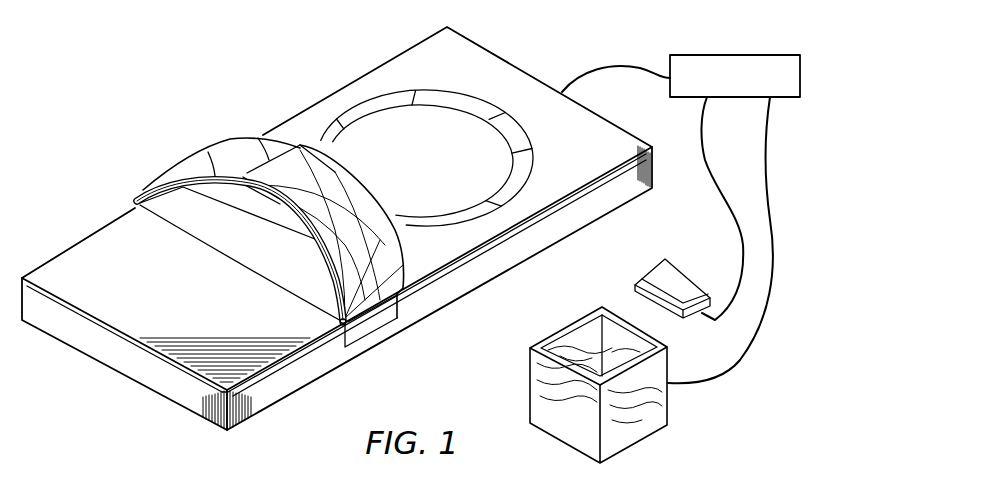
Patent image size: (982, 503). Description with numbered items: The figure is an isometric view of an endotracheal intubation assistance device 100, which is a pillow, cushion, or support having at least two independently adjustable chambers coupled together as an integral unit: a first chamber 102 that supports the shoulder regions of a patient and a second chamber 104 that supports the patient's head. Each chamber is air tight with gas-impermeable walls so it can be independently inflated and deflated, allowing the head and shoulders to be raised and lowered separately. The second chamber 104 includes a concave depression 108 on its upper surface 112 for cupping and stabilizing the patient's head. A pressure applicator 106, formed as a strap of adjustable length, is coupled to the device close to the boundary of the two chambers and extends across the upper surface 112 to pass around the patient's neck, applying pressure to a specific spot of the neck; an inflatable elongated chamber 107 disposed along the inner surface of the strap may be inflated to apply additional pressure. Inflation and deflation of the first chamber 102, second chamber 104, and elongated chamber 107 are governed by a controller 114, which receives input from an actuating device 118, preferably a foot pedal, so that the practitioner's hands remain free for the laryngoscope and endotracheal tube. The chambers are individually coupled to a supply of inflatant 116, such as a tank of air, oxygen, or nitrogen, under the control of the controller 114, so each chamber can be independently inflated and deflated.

The endotracheal intubation assistance device 100 is at (178, 66).
The first chamber 102 is at (86, 246).
The second chamber 104 is at (342, 87).
The pressure applicator 106 is at (350, 180).
The inflatable elongated chamber 107 is at (203, 186).
The concave depression 108 is at (437, 118).
The upper surface 112 is at (518, 70).
The controller 114 is at (737, 54).
The supply of inflatant 116 is at (668, 402).
The actuating device 118 is at (688, 270).